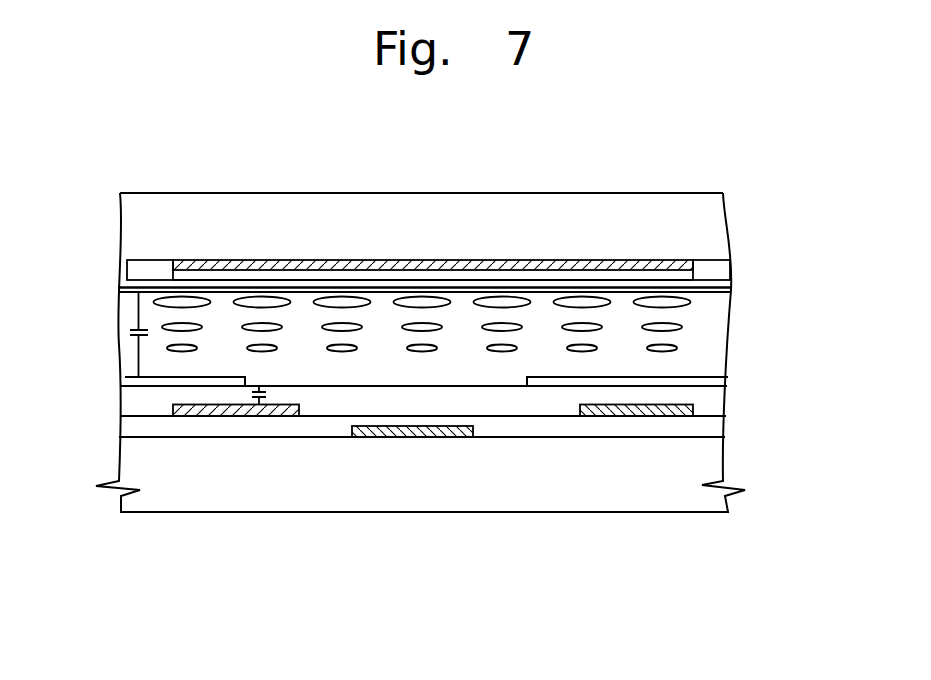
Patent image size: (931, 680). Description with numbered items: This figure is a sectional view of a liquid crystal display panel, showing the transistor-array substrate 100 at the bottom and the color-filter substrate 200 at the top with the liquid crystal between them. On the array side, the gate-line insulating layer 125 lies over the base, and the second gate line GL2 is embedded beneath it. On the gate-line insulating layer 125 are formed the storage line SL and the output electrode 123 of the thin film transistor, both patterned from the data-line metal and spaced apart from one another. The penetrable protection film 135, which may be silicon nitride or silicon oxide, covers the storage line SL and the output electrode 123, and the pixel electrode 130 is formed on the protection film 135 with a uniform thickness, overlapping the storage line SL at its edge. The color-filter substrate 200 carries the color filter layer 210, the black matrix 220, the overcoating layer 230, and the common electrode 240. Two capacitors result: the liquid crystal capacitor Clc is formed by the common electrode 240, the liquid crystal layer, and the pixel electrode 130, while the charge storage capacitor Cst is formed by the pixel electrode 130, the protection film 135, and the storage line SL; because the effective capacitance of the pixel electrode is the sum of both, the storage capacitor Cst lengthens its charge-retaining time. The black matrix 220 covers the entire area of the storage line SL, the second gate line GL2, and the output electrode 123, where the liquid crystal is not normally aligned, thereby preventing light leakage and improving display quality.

The transistor-array substrate 100 is at (813, 368).
The gate-line insulating layer 125 is at (715, 426).
The protection film 135 is at (720, 395).
The pixel electrode 130 is at (134, 379).
The output electrode 123 is at (637, 410).
The storage line SL is at (237, 410).
The second gate line GL2 is at (412, 432).
The charge storage capacitor Cst is at (265, 391).
The liquid crystal capacitor Clc is at (134, 333).
The color-filter substrate 200 is at (813, 227).
The color filter layer 210 is at (723, 268).
The black matrix 220 is at (660, 257).
The overcoating layer 230 is at (725, 287).
The common electrode 240 is at (725, 292).